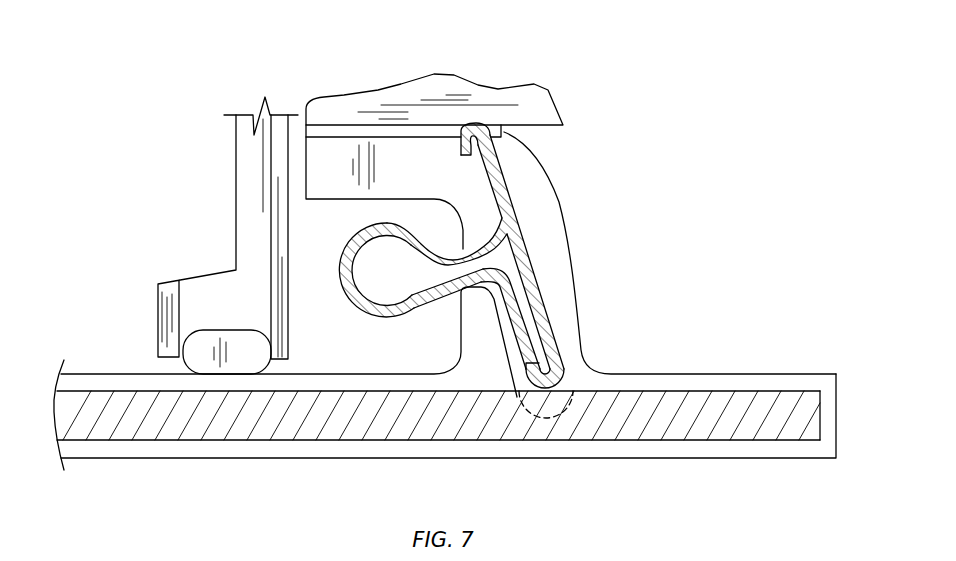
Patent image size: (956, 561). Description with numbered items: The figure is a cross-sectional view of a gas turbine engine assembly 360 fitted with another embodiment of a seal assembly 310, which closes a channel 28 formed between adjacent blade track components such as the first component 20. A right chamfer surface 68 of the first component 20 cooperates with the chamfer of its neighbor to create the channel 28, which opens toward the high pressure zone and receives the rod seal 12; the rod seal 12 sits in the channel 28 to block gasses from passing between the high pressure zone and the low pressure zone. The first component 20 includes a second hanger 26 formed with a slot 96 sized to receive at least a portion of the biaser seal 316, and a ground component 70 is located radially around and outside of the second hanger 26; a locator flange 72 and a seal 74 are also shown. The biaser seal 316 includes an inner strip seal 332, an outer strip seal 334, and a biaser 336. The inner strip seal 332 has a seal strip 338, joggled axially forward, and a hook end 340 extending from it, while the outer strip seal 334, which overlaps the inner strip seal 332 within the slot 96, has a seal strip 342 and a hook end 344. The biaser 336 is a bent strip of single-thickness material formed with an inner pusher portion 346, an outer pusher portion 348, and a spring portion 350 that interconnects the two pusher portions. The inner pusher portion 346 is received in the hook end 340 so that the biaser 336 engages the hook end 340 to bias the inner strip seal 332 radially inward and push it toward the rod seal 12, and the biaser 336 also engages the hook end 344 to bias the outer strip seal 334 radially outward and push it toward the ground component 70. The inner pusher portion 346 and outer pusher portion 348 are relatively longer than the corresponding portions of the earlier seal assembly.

The gas turbine engine assembly 360 is at (130, 58).
The seal assembly 310 is at (690, 132).
The rod seal 12 is at (77, 364).
The first component 20 is at (762, 358).
The channel 28 is at (133, 358).
The right chamfer surface 68 is at (808, 377).
The ground component 70 is at (503, 70).
The locator flange 72 is at (223, 161).
The seal 74 is at (191, 316).
The second hanger 26 is at (318, 174).
The slot 96 is at (515, 131).
The biaser seal 316 is at (379, 195).
The hook end 344 is at (459, 115).
The outer pusher portion 348 is at (476, 198).
The outer strip seal 334 is at (530, 203).
The seal strip 342 is at (536, 237).
The seal strip 338 is at (554, 295).
The inner strip seal 332 is at (568, 329).
The hook end 340 is at (570, 398).
The inner pusher portion 346 is at (497, 324).
The spring portion 350 is at (417, 325).
The biaser 336 is at (326, 265).